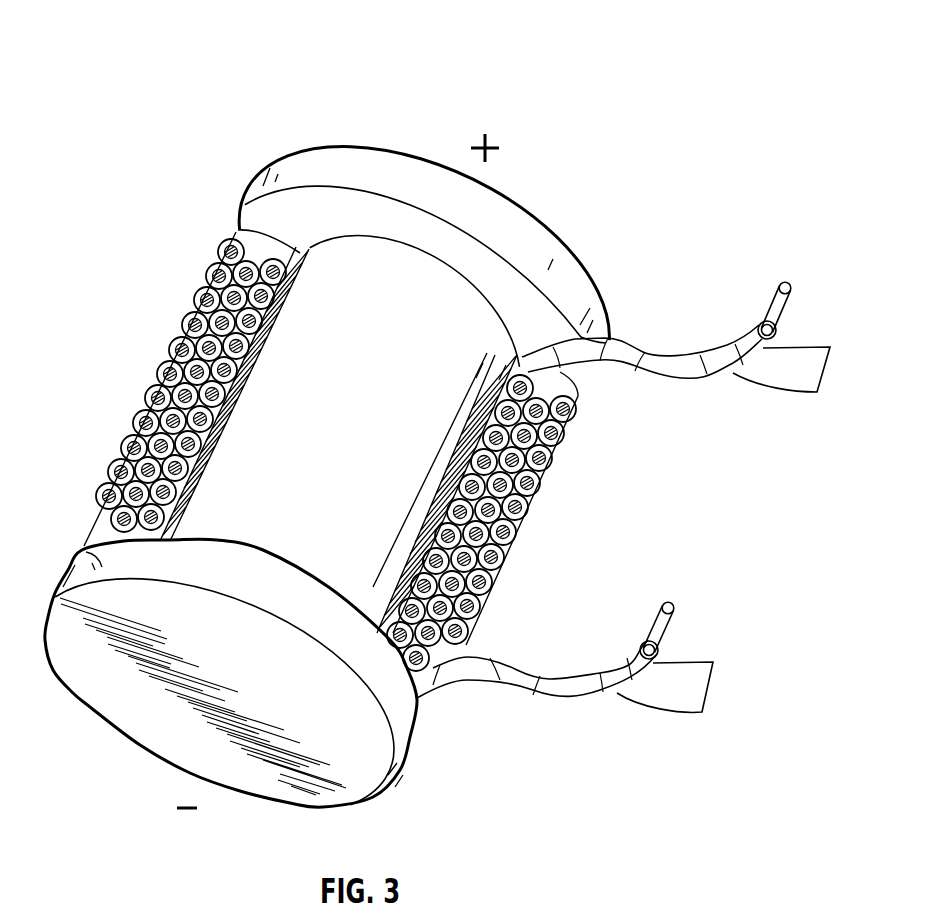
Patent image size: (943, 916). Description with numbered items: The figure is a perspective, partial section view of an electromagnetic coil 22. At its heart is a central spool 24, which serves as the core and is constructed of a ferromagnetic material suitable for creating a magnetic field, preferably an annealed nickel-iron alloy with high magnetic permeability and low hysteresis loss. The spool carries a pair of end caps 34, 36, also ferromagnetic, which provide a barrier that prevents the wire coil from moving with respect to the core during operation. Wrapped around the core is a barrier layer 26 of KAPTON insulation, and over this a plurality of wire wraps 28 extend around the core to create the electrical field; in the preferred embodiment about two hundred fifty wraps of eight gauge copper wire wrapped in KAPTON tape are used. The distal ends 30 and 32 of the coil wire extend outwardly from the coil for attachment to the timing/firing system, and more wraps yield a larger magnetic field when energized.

The electromagnetic coil 22 is at (252, 95).
The central spool 24 is at (316, 474).
The barrier layer 26 is at (237, 224).
The wire wraps 28 is at (764, 362).
The distal end of coil wire 30 is at (658, 614).
The distal end of coil wire 32 is at (792, 308).
The end cap 34 is at (503, 218).
The end cap 36 is at (98, 563).